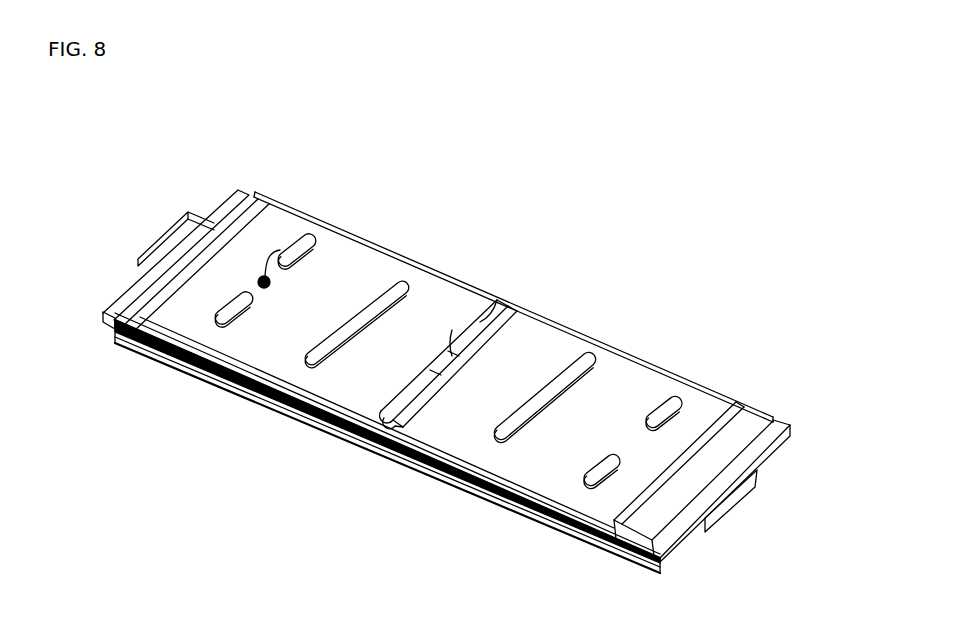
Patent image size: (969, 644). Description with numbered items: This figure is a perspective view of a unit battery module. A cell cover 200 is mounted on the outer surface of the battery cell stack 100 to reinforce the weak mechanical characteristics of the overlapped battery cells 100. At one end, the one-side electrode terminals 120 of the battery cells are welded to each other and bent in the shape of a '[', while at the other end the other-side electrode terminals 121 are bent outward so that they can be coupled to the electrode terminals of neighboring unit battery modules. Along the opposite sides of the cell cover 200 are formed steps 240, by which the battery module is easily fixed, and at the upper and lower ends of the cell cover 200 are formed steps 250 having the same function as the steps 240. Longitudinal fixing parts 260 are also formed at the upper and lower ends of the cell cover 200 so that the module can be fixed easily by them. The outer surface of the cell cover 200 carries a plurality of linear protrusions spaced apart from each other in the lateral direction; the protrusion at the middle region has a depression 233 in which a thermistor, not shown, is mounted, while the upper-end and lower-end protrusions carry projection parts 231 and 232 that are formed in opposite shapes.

The battery cell stack 100 is at (790, 411).
The one-side electrode terminals 120 is at (722, 511).
The other-side electrode terminals 121 is at (147, 238).
The cell cover 200 is at (279, 428).
The projection part 231 is at (318, 262).
The projection part 232 is at (632, 440).
The depression 233 is at (514, 305).
The steps 240 is at (430, 462).
The steps 250 is at (230, 202).
The longitudinal fixing parts 260 is at (275, 204).